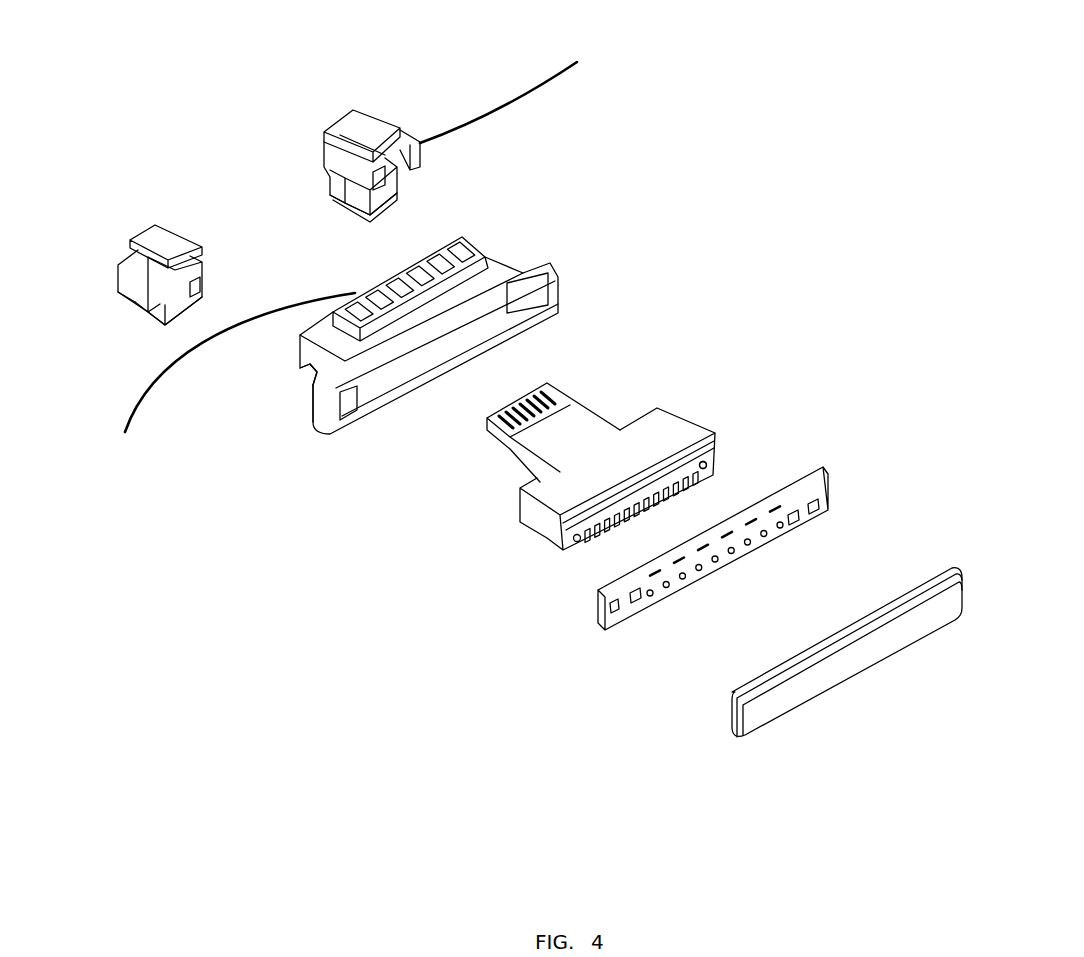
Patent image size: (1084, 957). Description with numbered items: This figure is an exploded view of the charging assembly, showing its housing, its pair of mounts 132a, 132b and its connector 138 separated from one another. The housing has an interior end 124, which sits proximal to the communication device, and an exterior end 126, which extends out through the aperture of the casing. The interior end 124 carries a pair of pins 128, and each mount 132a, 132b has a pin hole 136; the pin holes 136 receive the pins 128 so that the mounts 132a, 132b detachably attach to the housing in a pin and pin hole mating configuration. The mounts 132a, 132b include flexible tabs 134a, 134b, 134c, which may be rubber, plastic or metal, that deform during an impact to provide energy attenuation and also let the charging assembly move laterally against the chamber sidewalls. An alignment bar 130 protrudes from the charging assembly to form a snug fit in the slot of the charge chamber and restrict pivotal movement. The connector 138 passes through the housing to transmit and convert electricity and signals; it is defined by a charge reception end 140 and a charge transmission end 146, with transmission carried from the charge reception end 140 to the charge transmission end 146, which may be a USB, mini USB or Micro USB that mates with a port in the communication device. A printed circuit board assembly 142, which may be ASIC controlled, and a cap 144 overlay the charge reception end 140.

The interior end 124 is at (556, 310).
The exterior end 126 is at (298, 346).
The pins 128 is at (303, 378).
The alignment bar 130 is at (226, 373).
The mount 132a is at (104, 216).
The mount 132b is at (310, 107).
The flexible tab 134a is at (170, 245).
The flexible tab 134b is at (127, 304).
The flexible tab 134c is at (167, 330).
The pin holes 136 is at (205, 287).
The connector 138 is at (546, 535).
The charge reception end 140 is at (713, 467).
The printed circuit board assembly 142 is at (623, 635).
The cap 144 is at (818, 695).
The charge transmission end 146 is at (485, 430).